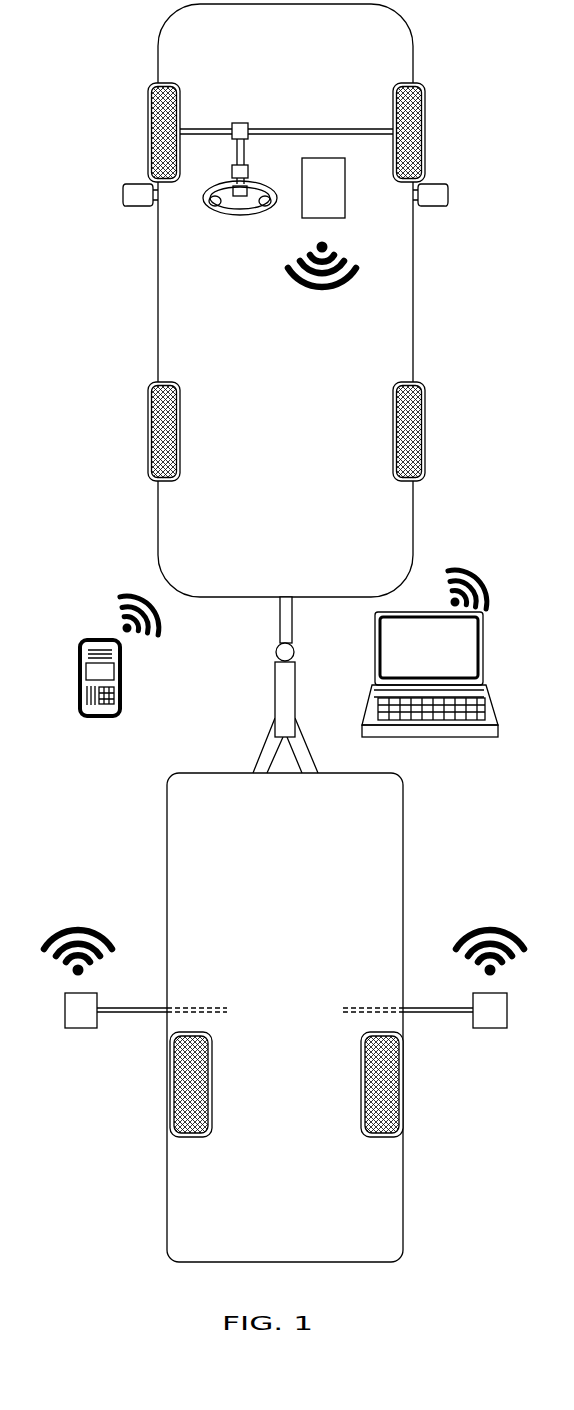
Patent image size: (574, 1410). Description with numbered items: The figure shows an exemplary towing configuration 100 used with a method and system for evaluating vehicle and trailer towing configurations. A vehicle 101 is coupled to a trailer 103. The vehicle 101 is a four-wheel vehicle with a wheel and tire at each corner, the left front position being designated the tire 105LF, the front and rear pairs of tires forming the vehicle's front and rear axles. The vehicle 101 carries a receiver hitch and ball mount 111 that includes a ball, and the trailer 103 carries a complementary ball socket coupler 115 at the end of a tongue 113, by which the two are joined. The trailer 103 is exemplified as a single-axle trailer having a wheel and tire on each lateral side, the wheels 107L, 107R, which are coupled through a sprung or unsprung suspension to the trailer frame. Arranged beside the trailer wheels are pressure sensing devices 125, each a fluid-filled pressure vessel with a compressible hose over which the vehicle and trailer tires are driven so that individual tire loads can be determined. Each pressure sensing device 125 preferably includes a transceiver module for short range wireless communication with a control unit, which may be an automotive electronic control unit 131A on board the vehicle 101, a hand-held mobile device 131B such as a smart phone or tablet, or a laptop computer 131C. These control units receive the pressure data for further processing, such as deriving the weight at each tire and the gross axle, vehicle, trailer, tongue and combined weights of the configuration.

The towing configuration 100 is at (128, 548).
The vehicle 101 is at (441, 287).
The trailer 103 is at (440, 847).
The left front wheel and tire 105LF is at (148, 103).
The left trailer wheel and tire 107L is at (167, 1092).
The right trailer wheel and tire 107R is at (403, 1115).
The receiver hitch and ball mount 111 is at (292, 612).
The tongue 113 is at (262, 745).
The ball socket coupler 115 is at (277, 651).
The pressure sensing device 125 is at (107, 1038).
The automotive electronic control unit 131A is at (345, 207).
The mobile device 131B is at (101, 718).
The laptop computer 131C is at (483, 664).